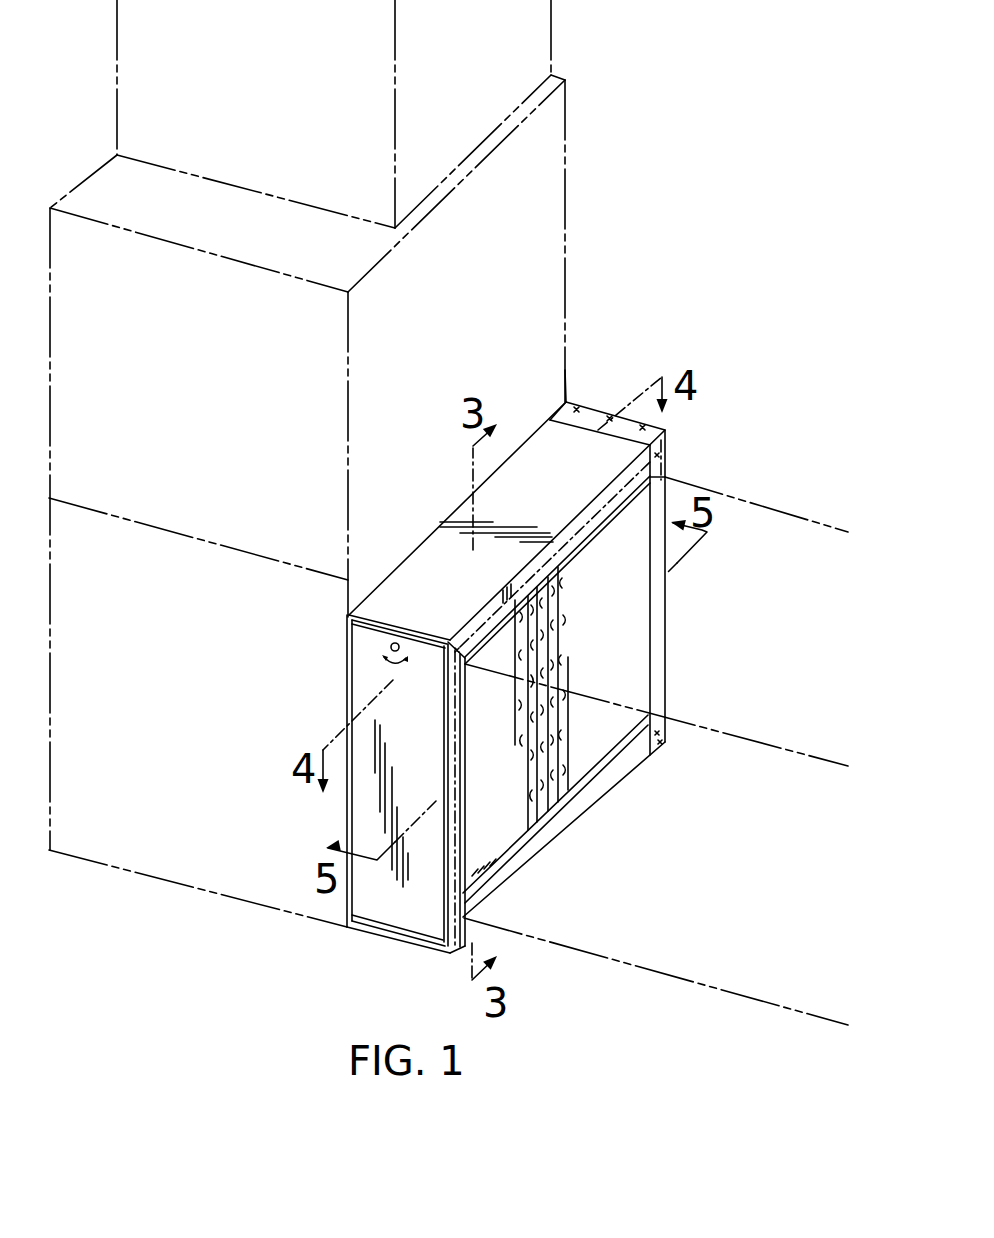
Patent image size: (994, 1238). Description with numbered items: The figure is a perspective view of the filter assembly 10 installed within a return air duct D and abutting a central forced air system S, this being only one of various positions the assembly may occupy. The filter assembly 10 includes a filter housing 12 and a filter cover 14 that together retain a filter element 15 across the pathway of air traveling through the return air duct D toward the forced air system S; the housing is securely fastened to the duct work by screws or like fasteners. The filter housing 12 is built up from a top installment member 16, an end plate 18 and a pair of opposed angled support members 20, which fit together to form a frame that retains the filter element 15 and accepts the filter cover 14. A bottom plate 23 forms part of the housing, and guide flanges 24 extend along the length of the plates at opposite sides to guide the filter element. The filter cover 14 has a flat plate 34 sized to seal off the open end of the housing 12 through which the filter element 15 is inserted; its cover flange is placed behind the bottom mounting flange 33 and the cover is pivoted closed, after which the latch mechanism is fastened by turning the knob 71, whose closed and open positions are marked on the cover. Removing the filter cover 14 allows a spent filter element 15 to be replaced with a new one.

The filter assembly 10 is at (606, 385).
The filter housing 12 is at (410, 545).
The filter cover 14 is at (388, 903).
The filter element 15 is at (537, 820).
The top installment member 16 is at (398, 563).
The end plate 18 is at (665, 615).
The angled support member 20 is at (457, 835).
The bottom plate 23 is at (537, 450).
The guide flange 24 is at (575, 540).
The bottom mounting flange 33 is at (413, 946).
The flat plate 34 is at (362, 690).
The knob 71 is at (398, 657).
The central forced air system S is at (556, 227).
The return air duct D is at (768, 517).